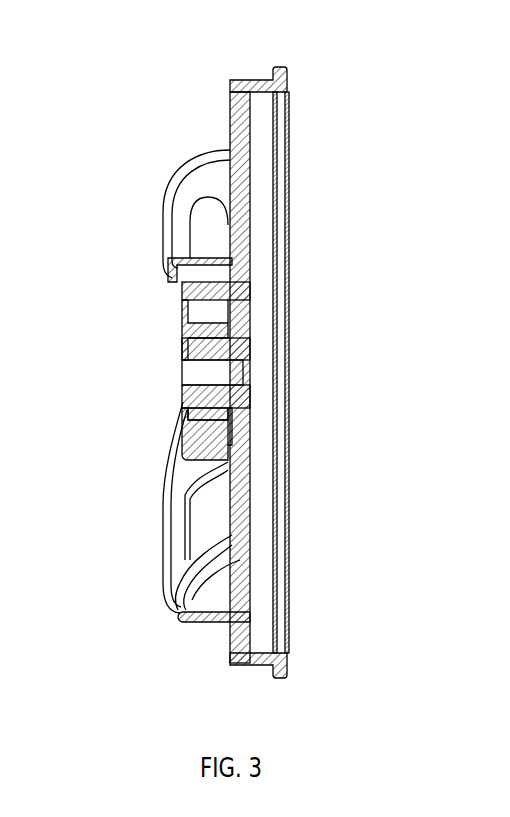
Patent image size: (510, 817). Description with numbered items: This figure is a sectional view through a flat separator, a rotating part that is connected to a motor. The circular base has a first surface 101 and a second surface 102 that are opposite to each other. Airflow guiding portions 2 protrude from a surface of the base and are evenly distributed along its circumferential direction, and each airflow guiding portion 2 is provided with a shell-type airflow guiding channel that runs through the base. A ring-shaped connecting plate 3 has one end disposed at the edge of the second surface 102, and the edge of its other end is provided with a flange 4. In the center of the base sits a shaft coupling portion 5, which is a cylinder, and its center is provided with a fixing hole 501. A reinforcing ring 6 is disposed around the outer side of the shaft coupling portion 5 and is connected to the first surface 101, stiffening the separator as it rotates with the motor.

The first surface 101 is at (230, 120).
The second surface 102 is at (253, 128).
The airflow guiding portion 2 is at (218, 585).
The ring-shaped connecting plate 3 is at (270, 623).
The flange 4 is at (288, 670).
The shaft coupling portion 5 is at (183, 338).
The fixing hole 501 is at (207, 377).
The reinforcing ring 6 is at (178, 278).